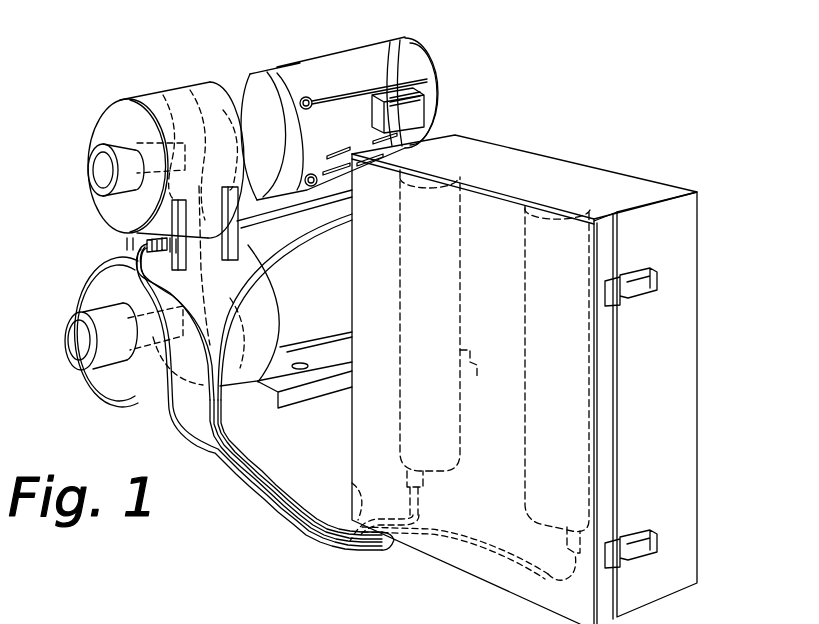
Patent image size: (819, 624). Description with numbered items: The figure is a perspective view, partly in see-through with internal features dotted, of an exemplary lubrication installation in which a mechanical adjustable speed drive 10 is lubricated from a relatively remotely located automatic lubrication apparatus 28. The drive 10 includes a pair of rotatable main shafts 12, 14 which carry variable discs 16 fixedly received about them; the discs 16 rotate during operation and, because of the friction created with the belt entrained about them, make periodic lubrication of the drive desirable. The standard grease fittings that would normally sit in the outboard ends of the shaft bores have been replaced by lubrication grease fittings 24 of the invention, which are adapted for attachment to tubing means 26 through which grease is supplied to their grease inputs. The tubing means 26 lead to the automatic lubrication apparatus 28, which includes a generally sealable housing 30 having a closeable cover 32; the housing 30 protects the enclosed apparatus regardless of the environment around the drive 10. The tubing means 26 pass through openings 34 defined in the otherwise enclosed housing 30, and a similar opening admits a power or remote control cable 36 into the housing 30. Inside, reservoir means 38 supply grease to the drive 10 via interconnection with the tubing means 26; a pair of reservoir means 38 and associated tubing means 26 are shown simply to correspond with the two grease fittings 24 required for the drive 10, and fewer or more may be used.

The mechanical adjustable speed drive 10 is at (103, 52).
The rotatable shaft 12 is at (137, 100).
The rotatable shaft 14 is at (141, 376).
The variable discs 16 is at (206, 76).
The lubrication grease fittings 24 is at (94, 122).
The tubing means 26 is at (137, 230).
The automatic lubrication apparatus 28 is at (563, 103).
The housing 30 is at (698, 260).
The closeable cover 32 is at (603, 397).
The openings 34 is at (352, 493).
The remote control cable 36 is at (233, 437).
The reservoir means 38 is at (535, 438).